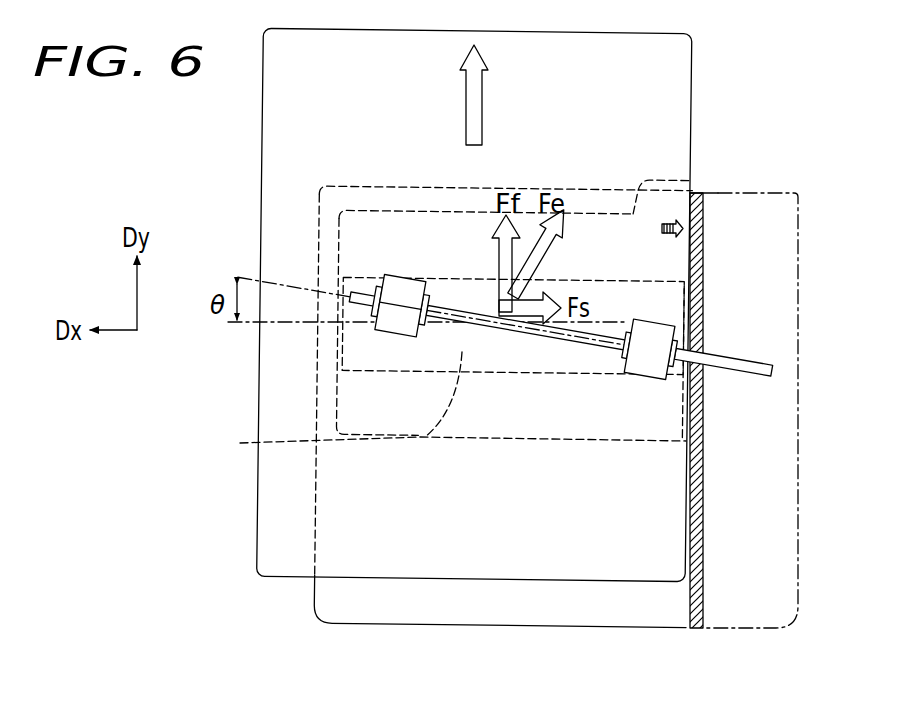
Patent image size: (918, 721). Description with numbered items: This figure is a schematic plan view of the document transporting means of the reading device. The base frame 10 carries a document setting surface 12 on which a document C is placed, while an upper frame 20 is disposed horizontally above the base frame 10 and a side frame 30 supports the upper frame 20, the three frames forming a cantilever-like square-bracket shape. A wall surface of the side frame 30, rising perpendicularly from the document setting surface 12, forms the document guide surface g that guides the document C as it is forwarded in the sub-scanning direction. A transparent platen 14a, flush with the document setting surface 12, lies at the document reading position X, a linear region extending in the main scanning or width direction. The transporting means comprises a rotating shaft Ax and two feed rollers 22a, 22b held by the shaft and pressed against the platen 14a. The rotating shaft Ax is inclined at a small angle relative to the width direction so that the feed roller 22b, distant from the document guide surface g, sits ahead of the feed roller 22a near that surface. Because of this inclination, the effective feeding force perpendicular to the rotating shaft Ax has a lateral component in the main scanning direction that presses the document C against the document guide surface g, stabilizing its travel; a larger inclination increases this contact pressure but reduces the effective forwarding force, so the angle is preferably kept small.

The base frame 10 is at (318, 252).
The document setting surface 12 is at (336, 601).
The transparent platen 14a is at (240, 443).
The upper frame 20 is at (691, 179).
The feed roller 22a is at (647, 322).
The feed roller 22b is at (387, 332).
The side frame 30 is at (742, 193).
The document C is at (258, 485).
The document guide surface g is at (688, 603).
The document reading position X is at (246, 326).
The rotating shaft Ax is at (365, 283).